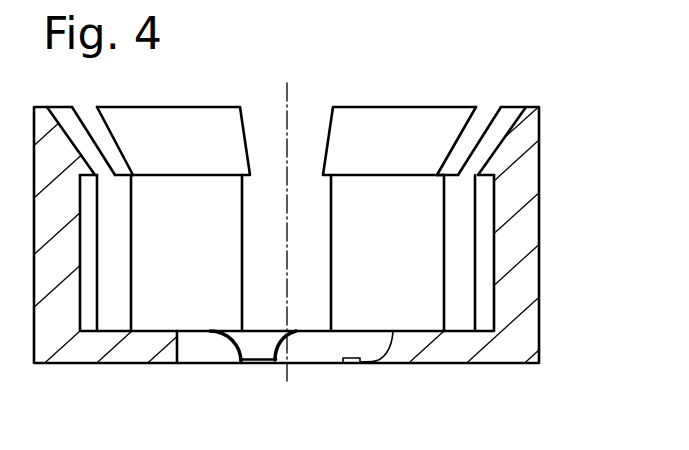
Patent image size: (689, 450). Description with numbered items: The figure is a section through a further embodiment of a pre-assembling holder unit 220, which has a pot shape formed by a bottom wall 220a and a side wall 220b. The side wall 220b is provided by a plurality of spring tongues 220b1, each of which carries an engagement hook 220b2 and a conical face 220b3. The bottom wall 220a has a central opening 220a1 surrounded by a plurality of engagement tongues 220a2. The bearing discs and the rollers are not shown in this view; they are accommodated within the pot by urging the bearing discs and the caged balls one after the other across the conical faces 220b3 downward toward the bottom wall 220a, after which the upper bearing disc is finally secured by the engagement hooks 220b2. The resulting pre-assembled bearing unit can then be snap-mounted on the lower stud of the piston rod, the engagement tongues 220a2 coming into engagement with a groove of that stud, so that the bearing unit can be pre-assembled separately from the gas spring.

The pre-assembling holder unit 220 is at (522, 280).
The bottom wall 220a is at (417, 348).
The central opening 220a1 is at (263, 362).
The engagement tongues 220a2 is at (213, 352).
The side wall 220b is at (520, 185).
The spring tongues 220b1 is at (474, 108).
The engagement hooks 220b2 is at (328, 183).
The conical faces 220b3 is at (377, 132).